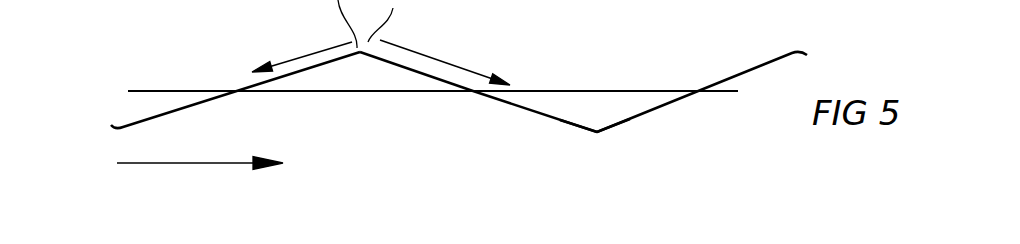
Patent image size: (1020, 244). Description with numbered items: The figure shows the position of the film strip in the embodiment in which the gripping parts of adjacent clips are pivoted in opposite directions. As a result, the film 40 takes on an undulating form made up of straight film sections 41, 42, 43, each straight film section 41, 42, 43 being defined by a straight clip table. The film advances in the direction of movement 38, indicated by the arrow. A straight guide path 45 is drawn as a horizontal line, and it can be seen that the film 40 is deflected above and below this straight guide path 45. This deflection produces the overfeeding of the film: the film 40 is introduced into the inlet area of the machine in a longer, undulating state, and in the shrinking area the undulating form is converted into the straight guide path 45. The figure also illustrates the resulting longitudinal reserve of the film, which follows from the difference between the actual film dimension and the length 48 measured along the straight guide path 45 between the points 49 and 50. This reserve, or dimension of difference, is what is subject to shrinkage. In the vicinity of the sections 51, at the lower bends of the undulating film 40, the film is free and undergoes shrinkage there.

The direction of movement 38 is at (147, 0).
The film 40 is at (518, 66).
The straight film section 41 is at (260, 92).
The straight film section 42 is at (448, 86).
The straight film section 43 is at (688, 93).
The straight guide path 45 is at (593, 91).
The length 48 is at (378, 92).
The point 49 is at (245, 90).
The point 50 is at (508, 91).
The section 51 is at (600, 132).